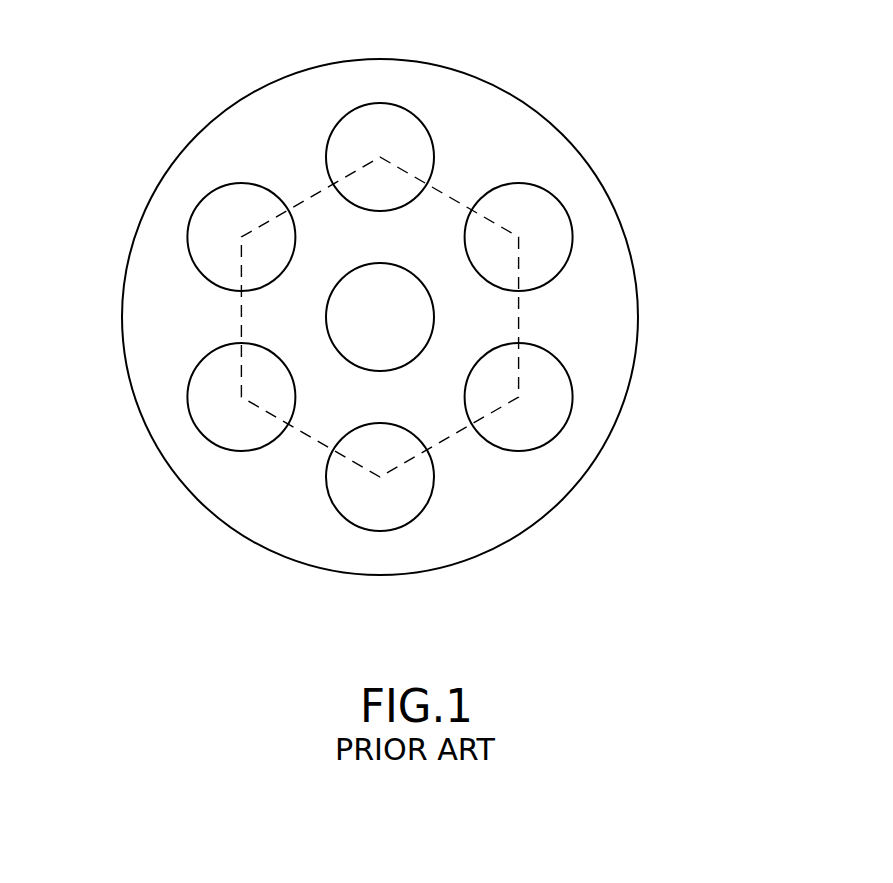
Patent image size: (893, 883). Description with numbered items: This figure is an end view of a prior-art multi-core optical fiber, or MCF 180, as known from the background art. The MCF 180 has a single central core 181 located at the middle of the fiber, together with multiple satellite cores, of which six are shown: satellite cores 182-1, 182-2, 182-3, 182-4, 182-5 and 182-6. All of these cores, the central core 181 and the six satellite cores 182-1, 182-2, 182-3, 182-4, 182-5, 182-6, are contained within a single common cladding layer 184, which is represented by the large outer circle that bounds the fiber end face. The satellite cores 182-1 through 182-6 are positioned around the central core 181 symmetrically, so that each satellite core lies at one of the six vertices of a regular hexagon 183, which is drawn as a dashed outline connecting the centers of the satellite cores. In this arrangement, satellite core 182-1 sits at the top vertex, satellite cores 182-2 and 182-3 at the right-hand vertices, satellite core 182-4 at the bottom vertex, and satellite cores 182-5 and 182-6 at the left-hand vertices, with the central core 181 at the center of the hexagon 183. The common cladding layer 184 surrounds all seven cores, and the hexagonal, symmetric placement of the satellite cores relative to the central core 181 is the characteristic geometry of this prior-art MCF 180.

The multi-core optical fiber (MCF) 180 is at (393, 311).
The central core 181 is at (392, 323).
The satellite core 182-1 is at (397, 130).
The satellite core 182-2 is at (560, 238).
The satellite core 182-3 is at (547, 418).
The satellite core 182-4 is at (405, 512).
The satellite core 182-5 is at (202, 417).
The satellite core 182-6 is at (215, 210).
The regular hexagon 183 is at (460, 203).
The common cladding layer 184 is at (593, 337).